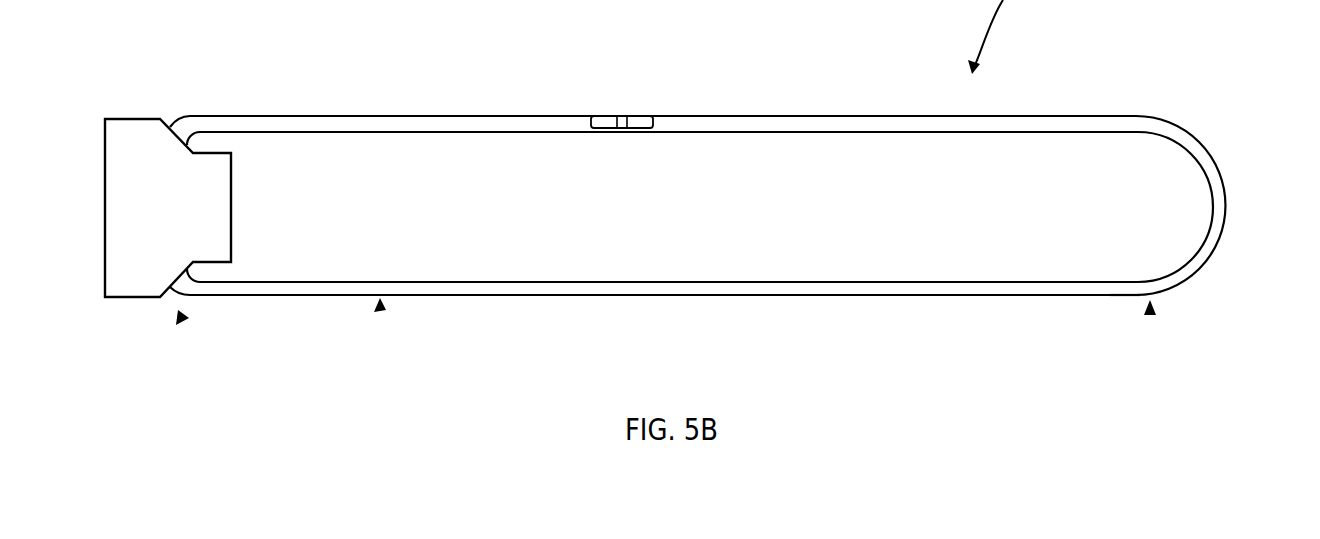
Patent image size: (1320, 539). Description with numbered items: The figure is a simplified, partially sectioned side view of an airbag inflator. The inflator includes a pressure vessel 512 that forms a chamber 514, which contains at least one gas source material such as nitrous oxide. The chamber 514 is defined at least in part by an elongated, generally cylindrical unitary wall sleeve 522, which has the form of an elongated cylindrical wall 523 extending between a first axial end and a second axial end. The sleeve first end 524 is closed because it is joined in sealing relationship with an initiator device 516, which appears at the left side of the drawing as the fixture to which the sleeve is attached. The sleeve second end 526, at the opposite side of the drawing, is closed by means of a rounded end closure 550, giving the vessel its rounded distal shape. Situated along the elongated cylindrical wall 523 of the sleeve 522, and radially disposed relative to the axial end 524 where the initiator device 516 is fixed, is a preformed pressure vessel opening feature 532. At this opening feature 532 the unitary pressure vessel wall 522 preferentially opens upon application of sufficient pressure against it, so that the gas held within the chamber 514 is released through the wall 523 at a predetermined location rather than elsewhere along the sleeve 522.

The pressure vessel 512 is at (397, 116).
The chamber 514 is at (762, 253).
The initiator device 516 is at (142, 142).
The unitary wall sleeve 522 is at (379, 302).
The elongated cylindrical wall 523 is at (585, 297).
The sleeve first end 524 is at (180, 314).
The sleeve second end 526 is at (1150, 304).
The preformed pressure vessel opening feature 532 is at (620, 120).
The rounded end closure 550 is at (1218, 220).